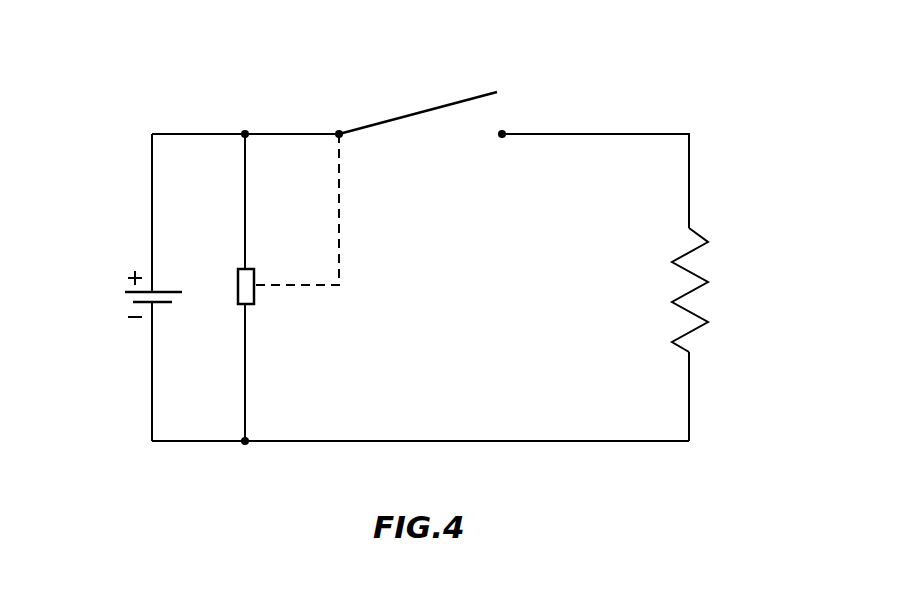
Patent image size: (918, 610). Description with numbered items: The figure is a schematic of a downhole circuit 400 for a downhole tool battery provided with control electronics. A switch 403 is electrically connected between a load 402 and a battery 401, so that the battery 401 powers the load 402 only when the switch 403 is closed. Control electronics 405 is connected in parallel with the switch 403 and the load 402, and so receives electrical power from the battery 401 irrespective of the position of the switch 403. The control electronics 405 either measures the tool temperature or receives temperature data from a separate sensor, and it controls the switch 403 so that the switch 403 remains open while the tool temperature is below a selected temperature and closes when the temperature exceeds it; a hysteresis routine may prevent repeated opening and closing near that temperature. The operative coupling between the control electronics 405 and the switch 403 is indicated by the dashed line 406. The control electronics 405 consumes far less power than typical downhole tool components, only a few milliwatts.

The downhole circuit 400 is at (755, 81).
The battery 401 is at (125, 292).
The load 402 is at (697, 272).
The switch 403 is at (472, 97).
The control electronics 405 is at (255, 300).
The dashed line 406 is at (339, 200).